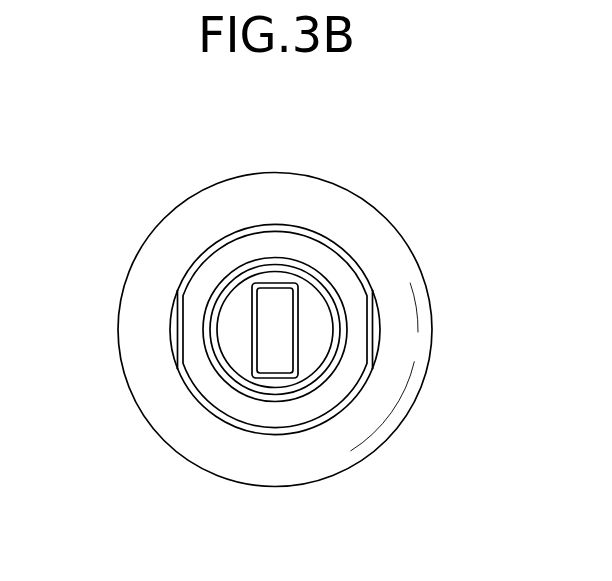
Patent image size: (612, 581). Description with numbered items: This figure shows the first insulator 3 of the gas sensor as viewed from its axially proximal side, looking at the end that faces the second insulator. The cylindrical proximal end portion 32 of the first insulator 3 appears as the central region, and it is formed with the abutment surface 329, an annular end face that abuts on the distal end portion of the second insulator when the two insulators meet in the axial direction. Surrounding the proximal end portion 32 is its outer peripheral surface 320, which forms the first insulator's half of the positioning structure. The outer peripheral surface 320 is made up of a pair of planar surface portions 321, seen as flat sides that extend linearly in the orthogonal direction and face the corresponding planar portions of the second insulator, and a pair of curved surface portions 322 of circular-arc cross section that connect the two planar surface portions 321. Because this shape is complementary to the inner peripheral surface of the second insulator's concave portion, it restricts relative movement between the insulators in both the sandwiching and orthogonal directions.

The first insulator 3 is at (437, 445).
The proximal end portion 32 is at (315, 405).
The outer peripheral surface 320 is at (465, 187).
The planar surface portion 321 is at (177, 332).
The curved surface portion 322 is at (297, 225).
The abutment surface 329 is at (207, 383).